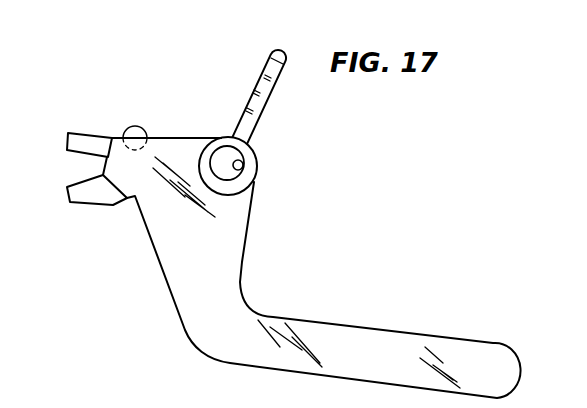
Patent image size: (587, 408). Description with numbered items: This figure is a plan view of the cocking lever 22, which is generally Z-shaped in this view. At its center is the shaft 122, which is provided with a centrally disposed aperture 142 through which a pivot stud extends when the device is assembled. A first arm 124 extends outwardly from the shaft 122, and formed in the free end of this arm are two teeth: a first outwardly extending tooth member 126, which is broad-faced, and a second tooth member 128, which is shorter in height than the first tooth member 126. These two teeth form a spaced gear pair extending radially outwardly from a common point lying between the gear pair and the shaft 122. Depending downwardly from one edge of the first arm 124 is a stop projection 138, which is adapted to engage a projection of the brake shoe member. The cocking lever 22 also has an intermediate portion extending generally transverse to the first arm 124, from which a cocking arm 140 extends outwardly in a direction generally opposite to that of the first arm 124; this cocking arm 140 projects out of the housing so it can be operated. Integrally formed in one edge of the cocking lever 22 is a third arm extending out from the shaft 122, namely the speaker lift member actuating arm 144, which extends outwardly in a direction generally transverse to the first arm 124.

The cocking lever 22 is at (258, 242).
The shaft 122 is at (255, 150).
The first arm 124 is at (192, 137).
The first tooth member 126 is at (80, 135).
The second tooth member 128 is at (80, 188).
The stop projection 138 is at (136, 126).
The cocking arm 140 is at (415, 345).
The aperture 142 is at (243, 167).
The speaker lift member actuating arm 144 is at (270, 96).